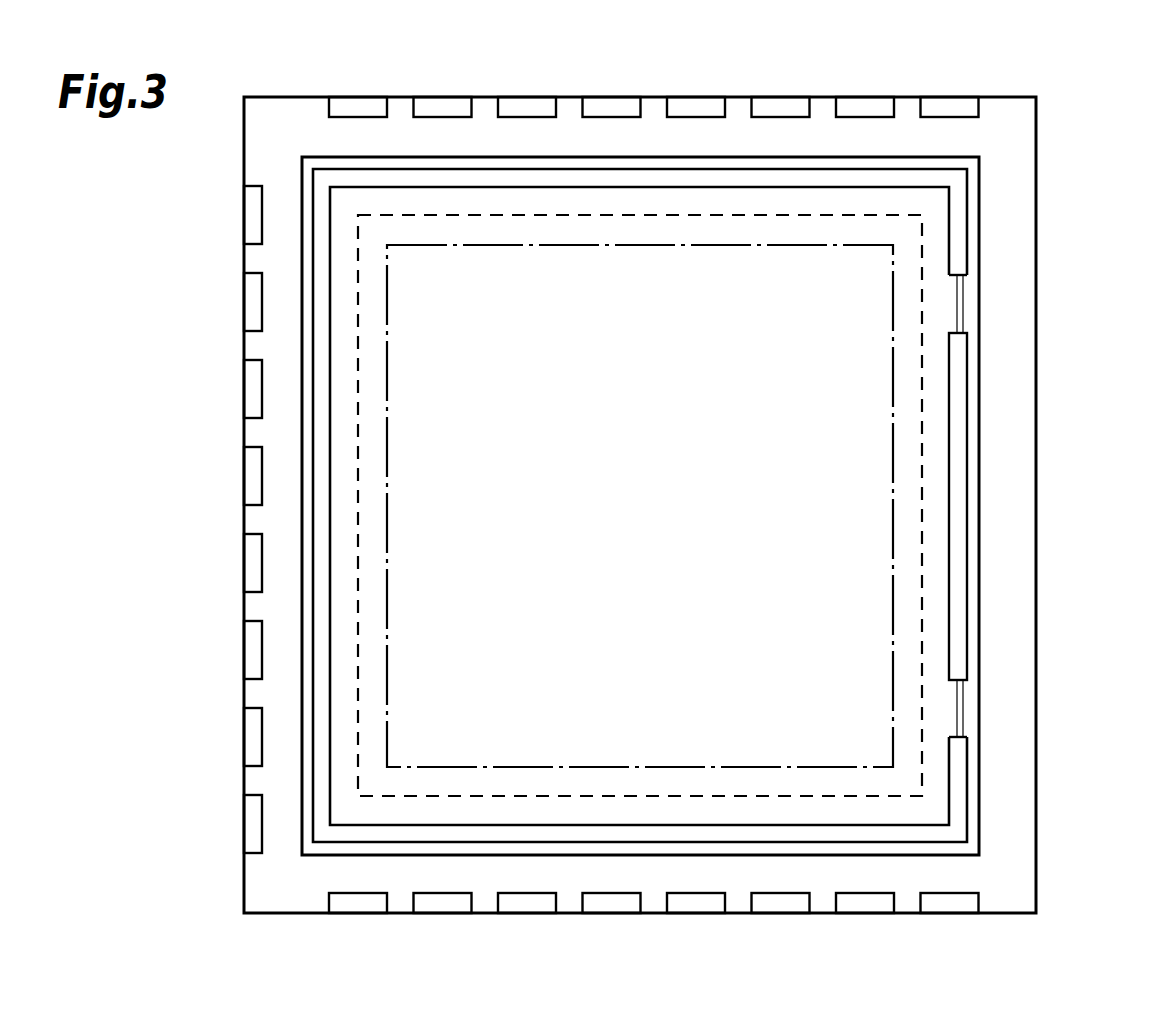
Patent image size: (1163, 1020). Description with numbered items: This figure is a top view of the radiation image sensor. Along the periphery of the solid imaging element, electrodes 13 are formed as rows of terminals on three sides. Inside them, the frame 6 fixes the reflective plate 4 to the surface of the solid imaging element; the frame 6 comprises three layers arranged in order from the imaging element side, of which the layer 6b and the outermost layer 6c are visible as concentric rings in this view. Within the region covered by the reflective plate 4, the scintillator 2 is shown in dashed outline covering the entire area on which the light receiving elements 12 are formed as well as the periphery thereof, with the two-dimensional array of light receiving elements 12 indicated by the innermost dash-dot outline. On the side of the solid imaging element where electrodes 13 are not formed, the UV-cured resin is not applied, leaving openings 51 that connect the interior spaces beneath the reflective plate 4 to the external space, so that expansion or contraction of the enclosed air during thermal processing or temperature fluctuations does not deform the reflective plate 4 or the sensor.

The electrodes 13 is at (869, 104).
The frame 6 is at (731, 506).
The second layer of the frame 6b is at (980, 247).
The third layer of the frame 6c is at (960, 217).
The reflective plate 4 is at (938, 307).
The openings 51 is at (960, 709).
The scintillator 2 is at (922, 427).
The light receiving elements 12 is at (893, 493).